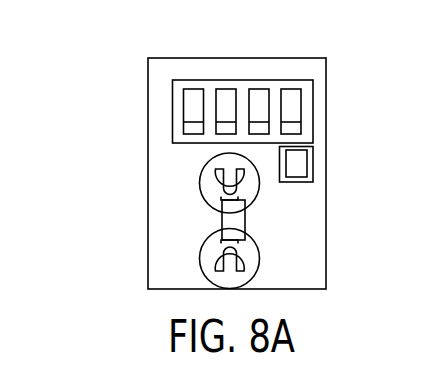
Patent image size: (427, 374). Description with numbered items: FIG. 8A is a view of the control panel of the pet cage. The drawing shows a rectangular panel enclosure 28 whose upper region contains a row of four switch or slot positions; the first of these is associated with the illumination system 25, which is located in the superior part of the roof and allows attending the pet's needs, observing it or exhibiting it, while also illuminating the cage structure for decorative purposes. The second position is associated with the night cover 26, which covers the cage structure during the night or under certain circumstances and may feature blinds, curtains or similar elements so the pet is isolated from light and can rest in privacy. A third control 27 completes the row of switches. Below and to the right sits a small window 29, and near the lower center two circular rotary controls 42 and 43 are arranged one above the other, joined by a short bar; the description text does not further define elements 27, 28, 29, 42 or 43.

The illumination system 25 is at (149, 73).
The night cover 26 is at (133, 91).
The slot 27 is at (117, 111).
The housing 28 is at (271, 170).
The window 29 is at (338, 146).
The upper clamp 42 is at (145, 179).
The lower clamp 43 is at (147, 240).